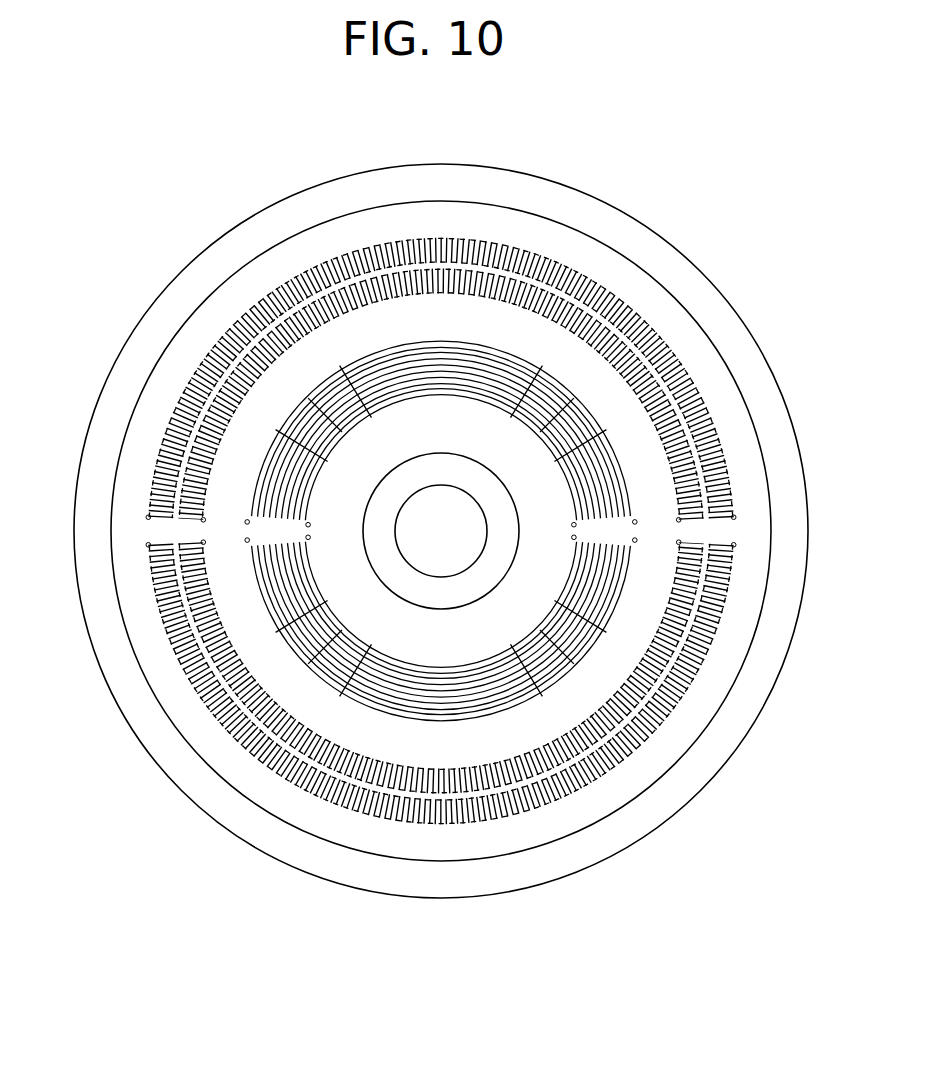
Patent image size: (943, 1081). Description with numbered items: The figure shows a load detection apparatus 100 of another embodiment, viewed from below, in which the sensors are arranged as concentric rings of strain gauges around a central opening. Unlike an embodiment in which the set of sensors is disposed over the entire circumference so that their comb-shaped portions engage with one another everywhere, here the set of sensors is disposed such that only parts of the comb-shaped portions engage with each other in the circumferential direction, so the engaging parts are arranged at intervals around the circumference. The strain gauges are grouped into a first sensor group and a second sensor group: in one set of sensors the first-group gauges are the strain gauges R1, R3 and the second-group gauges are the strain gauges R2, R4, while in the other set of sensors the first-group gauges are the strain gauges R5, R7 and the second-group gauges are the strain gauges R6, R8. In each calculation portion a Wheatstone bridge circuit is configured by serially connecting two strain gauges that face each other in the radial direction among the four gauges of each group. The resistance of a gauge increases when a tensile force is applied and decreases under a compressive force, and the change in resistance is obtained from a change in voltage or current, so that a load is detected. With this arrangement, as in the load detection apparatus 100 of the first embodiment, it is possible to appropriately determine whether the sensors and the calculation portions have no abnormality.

The load detection apparatus 100 is at (160, 238).
The strain gauge R1 is at (260, 600).
The strain gauge R2 is at (540, 803).
The strain gauge R3 is at (615, 450).
The strain gauge R4 is at (330, 262).
The strain gauge R5 is at (312, 558).
The strain gauge R6 is at (540, 748).
The strain gauge R7 is at (570, 493).
The strain gauge R8 is at (347, 310).